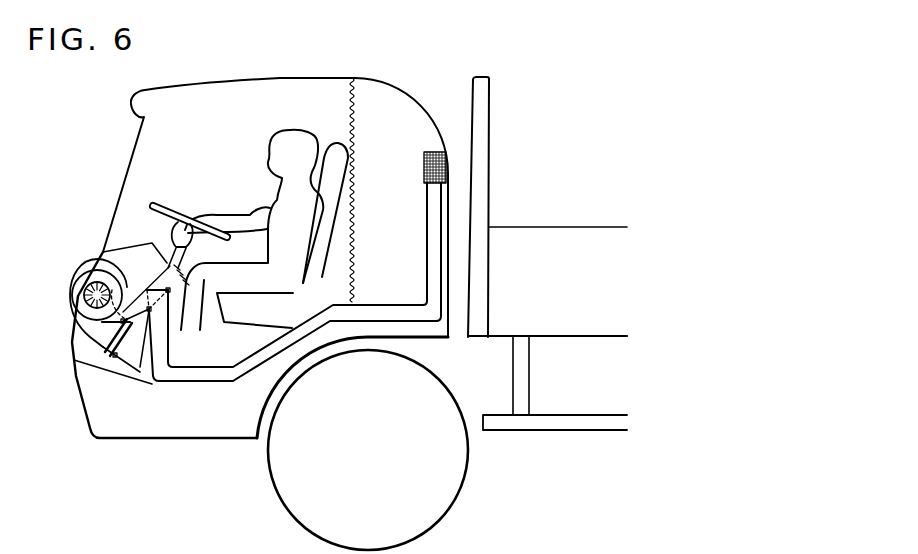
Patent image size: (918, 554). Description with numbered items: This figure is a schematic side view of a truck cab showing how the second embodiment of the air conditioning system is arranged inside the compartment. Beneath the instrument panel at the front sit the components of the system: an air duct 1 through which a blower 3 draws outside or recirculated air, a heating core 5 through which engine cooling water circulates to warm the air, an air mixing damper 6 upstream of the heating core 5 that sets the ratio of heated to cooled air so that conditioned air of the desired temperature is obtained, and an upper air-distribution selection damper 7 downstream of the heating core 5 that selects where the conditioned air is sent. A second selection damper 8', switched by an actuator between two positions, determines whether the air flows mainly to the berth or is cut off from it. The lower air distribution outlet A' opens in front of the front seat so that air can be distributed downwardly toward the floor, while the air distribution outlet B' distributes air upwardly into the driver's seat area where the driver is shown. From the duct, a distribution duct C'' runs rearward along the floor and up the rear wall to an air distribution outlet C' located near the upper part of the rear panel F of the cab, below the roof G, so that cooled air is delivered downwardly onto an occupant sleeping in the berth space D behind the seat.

The air duct 1 is at (125, 282).
The blower 3 is at (83, 295).
The heating core 5 is at (117, 360).
The air mixing damper 6 is at (100, 334).
The upper air-distribution selection damper 7 is at (152, 312).
The upper air-distribution selection damper 8' is at (140, 281).
The lower air distribution outlet A' is at (146, 367).
The air distribution outlet B' is at (195, 263).
The air distribution outlet C' is at (423, 158).
The distribution duct C'' is at (419, 252).
The berth space D is at (395, 242).
The rear panel F is at (437, 129).
The roof G is at (304, 78).